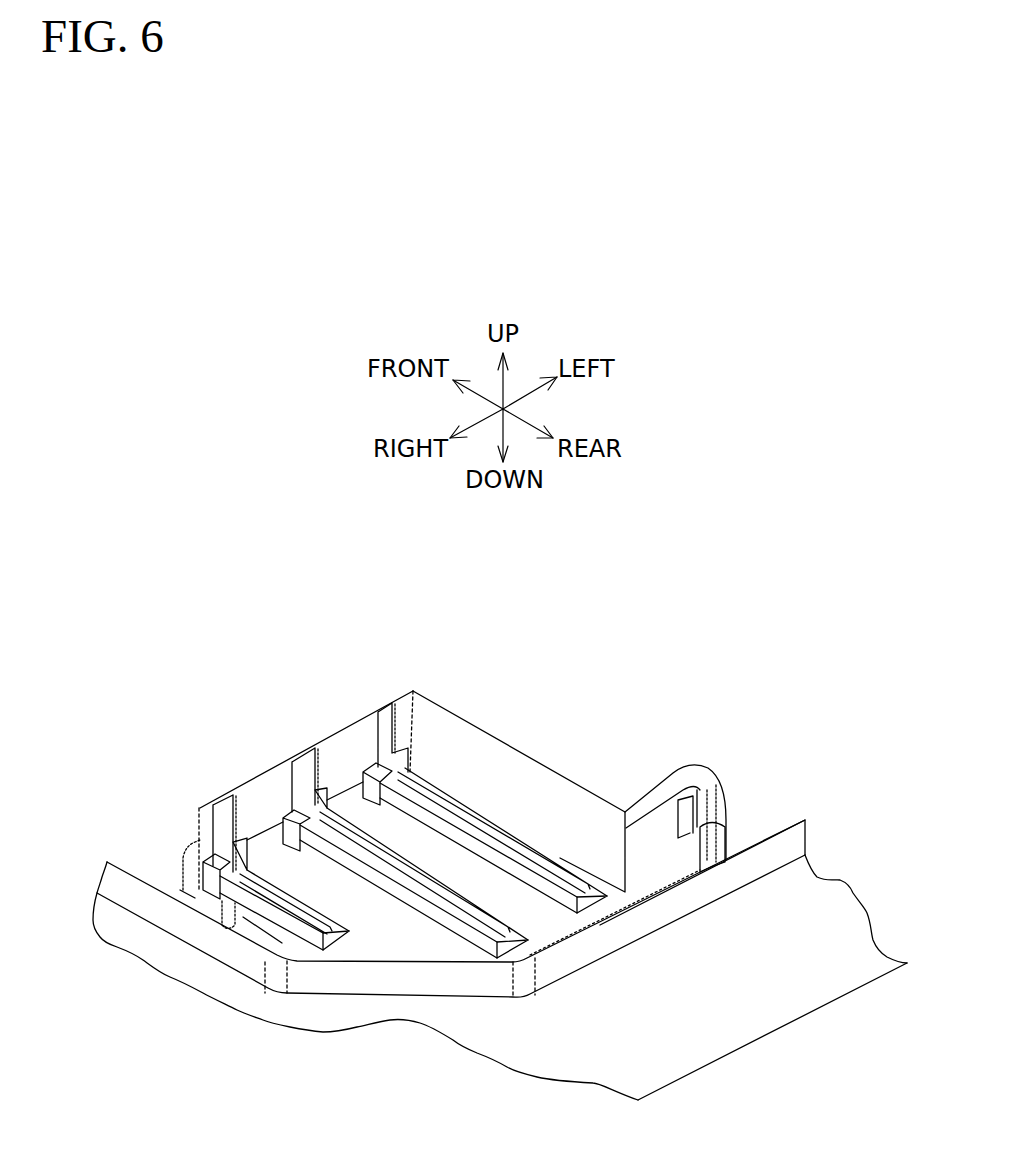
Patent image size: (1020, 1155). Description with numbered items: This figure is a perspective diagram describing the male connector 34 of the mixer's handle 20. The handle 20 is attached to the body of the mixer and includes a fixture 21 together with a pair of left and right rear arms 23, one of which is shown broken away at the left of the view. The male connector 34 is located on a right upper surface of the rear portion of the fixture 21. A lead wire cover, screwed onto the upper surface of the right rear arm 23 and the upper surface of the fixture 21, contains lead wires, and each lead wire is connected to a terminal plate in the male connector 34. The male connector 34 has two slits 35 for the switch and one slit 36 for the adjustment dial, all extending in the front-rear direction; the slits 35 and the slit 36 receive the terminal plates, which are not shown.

The handle 20 is at (784, 822).
The fixture 21 is at (757, 1018).
The rear arm 23 is at (247, 1003).
The male connector 34 is at (428, 713).
The slits 35 is at (305, 772).
The slit 36 is at (227, 820).